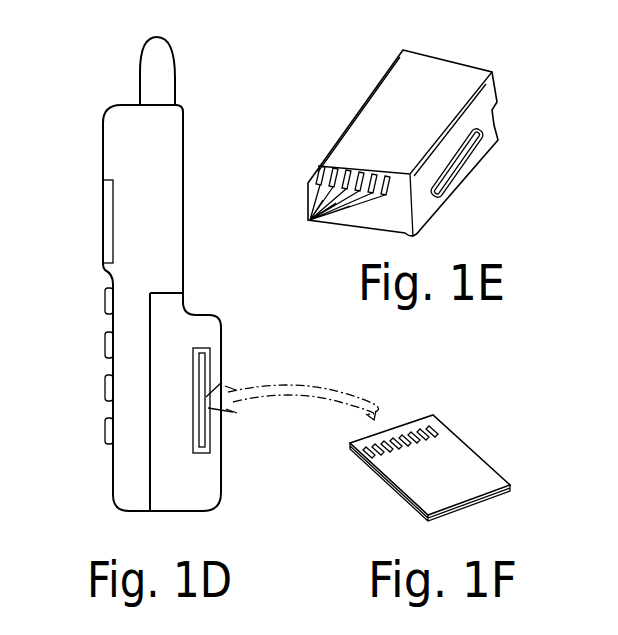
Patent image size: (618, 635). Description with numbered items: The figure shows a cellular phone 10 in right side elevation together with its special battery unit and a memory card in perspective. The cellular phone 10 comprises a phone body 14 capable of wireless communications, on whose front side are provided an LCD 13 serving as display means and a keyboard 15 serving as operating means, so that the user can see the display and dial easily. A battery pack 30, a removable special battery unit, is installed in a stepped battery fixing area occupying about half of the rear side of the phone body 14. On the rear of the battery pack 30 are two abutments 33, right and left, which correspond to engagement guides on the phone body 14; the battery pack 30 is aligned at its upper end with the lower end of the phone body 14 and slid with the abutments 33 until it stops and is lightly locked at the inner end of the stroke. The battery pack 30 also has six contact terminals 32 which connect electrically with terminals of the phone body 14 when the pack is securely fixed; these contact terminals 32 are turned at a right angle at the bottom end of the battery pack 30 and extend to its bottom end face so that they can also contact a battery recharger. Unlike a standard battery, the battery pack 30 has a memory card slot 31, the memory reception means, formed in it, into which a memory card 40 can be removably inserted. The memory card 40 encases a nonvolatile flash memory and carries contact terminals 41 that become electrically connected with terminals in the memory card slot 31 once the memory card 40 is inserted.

In FIG. 1D, the cellular phone 10 is at (51, 105).
In FIG. 1D, the LCD 13 is at (103, 211).
In FIG. 1D, the phone body 14 is at (123, 484).
In FIG. 1D, the keyboard 15 is at (104, 432).
In FIG. 1D, the battery pack 30 is at (198, 495).
In FIG. 1E, the battery pack 30 is at (413, 80).
In FIG. 1D, the memory card slot 31 is at (203, 432).
In FIG. 1E, the memory card slot 31 is at (462, 164).
In FIG. 1E, the contact terminals 32 is at (310, 221).
In FIG. 1E, the abutments 33 is at (417, 153).
In FIG. 1F, the memory card 40 is at (462, 462).
In FIG. 1F, the contact terminals 41 is at (446, 428).